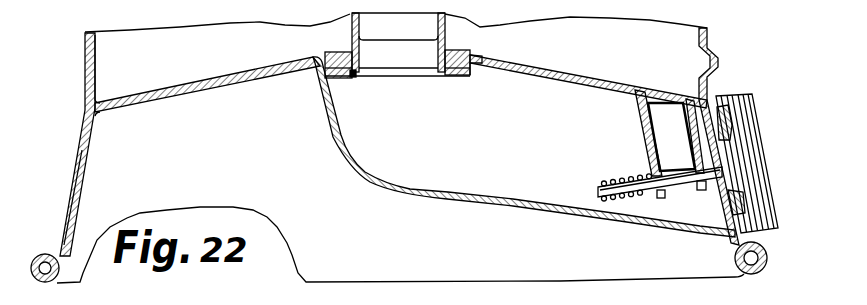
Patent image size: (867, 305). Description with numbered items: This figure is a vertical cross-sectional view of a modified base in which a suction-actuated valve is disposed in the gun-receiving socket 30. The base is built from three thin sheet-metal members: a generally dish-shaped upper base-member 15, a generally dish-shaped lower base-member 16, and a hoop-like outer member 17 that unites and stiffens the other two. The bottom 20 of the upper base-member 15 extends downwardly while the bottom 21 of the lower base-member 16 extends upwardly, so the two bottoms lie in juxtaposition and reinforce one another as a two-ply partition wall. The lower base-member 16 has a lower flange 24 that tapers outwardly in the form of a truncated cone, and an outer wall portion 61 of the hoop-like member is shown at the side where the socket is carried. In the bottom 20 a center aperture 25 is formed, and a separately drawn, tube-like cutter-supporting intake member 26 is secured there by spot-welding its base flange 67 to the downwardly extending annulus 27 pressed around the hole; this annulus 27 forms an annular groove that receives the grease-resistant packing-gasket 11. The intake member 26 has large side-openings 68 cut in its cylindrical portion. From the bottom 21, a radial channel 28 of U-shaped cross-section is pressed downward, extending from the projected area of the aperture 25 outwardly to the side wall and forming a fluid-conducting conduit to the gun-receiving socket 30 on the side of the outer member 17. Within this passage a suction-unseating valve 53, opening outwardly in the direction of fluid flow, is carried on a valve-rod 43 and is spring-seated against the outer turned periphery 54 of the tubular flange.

The packing-gasket 11 is at (460, 48).
The upper base-member 15 is at (243, 64).
The lower base-member 16 is at (277, 160).
The outer member 17 is at (76, 153).
The bottom of upper member 20 is at (583, 72).
The bottom of lower member 21 is at (517, 207).
The lower flange 24 is at (84, 179).
The center aperture 25 is at (440, 70).
The cutter-supporting intake member 26 is at (352, 33).
The annulus 27 is at (465, 74).
The radial channel 28 is at (512, 151).
The gun-receiving socket 30 is at (768, 232).
The valve-rod 43 is at (681, 180).
The suction-unseating valve 53 is at (724, 196).
The outer turned periphery 54 is at (713, 132).
The rear wall 61 is at (706, 62).
The base flange 67 is at (335, 73).
The side-openings 68 is at (398, 26).